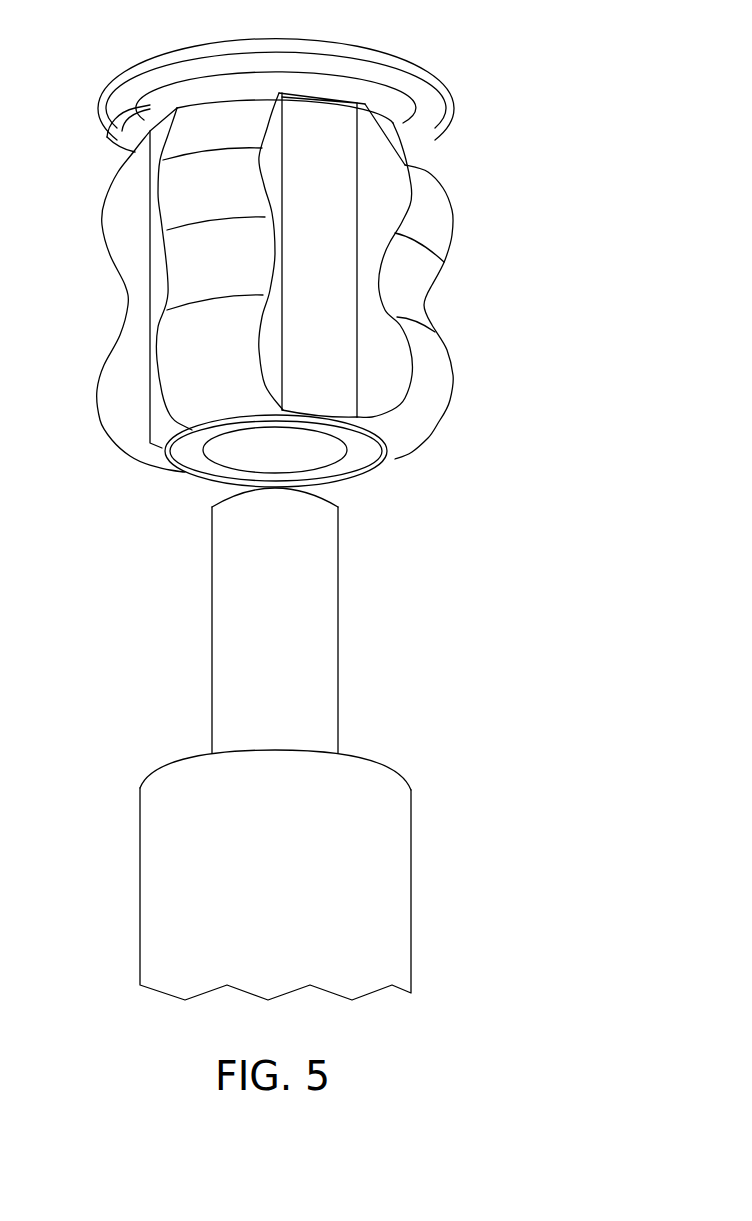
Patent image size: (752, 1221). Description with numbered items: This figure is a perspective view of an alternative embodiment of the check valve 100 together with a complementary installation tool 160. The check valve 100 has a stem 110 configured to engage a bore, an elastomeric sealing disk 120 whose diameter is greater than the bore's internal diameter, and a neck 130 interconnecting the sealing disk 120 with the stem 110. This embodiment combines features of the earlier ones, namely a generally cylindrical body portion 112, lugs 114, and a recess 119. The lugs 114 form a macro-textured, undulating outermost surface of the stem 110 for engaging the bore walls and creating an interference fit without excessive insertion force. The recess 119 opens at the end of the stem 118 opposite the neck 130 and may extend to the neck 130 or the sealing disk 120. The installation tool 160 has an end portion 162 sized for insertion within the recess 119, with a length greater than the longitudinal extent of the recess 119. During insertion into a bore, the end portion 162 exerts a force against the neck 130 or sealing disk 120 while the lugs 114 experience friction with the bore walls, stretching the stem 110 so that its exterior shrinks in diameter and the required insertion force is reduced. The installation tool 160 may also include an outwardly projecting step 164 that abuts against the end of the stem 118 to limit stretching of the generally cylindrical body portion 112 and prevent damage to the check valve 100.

The check valve 100 is at (523, 105).
The stem 110 is at (272, 308).
The generally cylindrical body portion 112 is at (152, 400).
The lugs 114 is at (435, 297).
The end of the stem 118 is at (160, 448).
The recess 119 is at (335, 455).
The elastomeric sealing disk 120 is at (344, 54).
The neck 130 is at (122, 118).
The installation tool 160 is at (241, 856).
The end portion 162 is at (338, 580).
The outwardly projecting step 164 is at (385, 768).